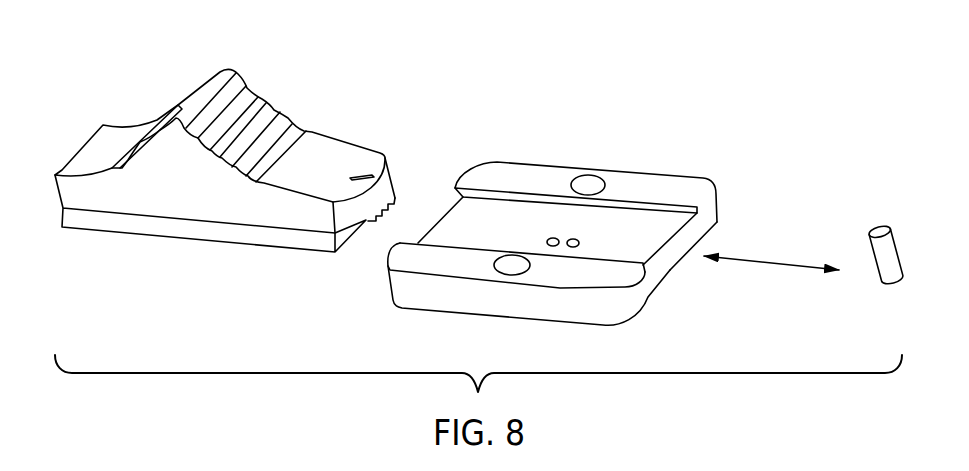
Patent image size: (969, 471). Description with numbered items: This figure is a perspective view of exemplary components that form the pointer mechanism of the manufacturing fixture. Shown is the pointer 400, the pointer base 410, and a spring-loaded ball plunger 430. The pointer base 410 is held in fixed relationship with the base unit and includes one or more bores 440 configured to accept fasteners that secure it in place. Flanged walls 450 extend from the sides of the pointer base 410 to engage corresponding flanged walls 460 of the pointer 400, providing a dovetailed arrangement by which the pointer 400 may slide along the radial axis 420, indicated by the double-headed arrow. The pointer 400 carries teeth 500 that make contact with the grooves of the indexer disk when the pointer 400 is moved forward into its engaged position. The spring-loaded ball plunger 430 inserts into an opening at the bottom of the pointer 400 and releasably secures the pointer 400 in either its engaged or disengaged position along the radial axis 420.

The pointer 400 is at (258, 89).
The pointer base 410 is at (468, 151).
The radial axis 420 is at (765, 266).
The spring-loaded ball plunger 430 is at (880, 224).
The bores 440 is at (585, 182).
The flanged walls 450 is at (663, 188).
The flanged walls 460 is at (183, 228).
The teeth 500 is at (367, 221).